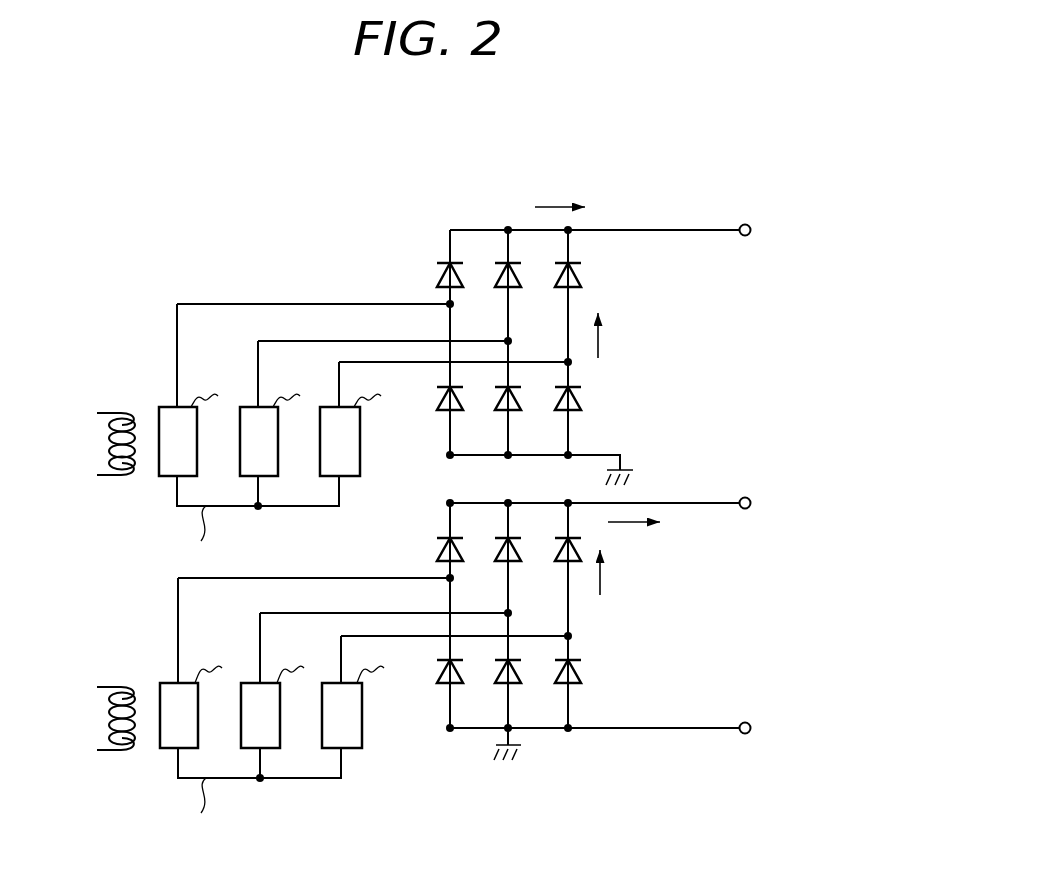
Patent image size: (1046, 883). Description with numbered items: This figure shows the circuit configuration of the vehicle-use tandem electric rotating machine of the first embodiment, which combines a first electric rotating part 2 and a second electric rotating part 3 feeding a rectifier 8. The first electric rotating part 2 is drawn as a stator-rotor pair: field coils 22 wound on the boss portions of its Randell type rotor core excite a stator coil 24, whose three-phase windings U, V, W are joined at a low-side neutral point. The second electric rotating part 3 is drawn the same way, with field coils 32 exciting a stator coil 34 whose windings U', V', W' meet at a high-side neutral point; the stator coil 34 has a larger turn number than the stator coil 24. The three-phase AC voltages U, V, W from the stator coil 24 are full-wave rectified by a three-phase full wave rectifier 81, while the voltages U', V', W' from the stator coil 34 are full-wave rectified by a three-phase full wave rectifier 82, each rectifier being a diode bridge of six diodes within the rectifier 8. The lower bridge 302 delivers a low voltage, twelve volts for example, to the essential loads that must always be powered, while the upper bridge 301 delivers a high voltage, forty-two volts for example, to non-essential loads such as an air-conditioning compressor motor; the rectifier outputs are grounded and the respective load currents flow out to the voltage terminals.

The first electric rotating part 2 is at (122, 660).
The second electric rotating part 3 is at (160, 305).
The rectifier 8 is at (522, 778).
The field coils 22 is at (100, 720).
The stator coil 24 is at (168, 758).
The field coils 32 is at (100, 447).
The stator coil 34 is at (165, 485).
The three-phase full wave rectifier 81 is at (440, 668).
The three-phase full wave rectifier 82 is at (438, 263).
The high-side rectifier bridge 301 is at (597, 408).
The low-side rectifier bridge 302 is at (597, 628).